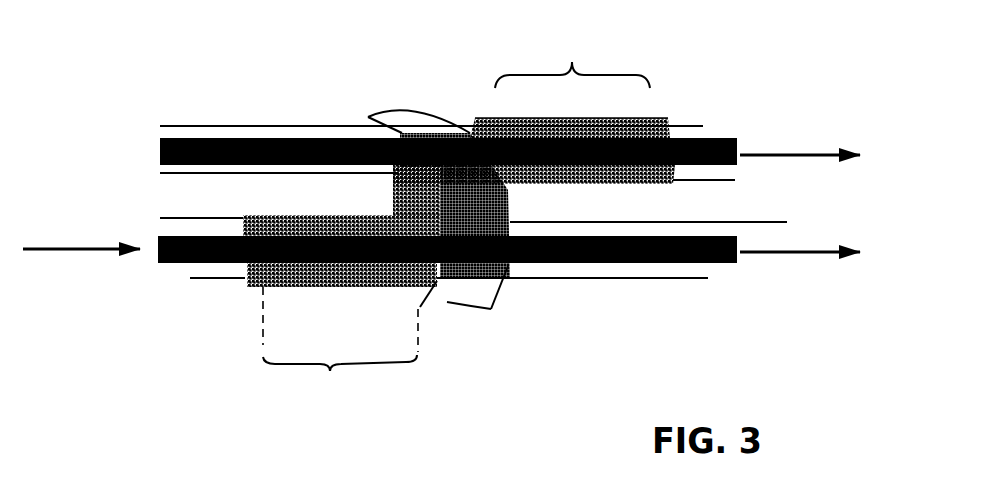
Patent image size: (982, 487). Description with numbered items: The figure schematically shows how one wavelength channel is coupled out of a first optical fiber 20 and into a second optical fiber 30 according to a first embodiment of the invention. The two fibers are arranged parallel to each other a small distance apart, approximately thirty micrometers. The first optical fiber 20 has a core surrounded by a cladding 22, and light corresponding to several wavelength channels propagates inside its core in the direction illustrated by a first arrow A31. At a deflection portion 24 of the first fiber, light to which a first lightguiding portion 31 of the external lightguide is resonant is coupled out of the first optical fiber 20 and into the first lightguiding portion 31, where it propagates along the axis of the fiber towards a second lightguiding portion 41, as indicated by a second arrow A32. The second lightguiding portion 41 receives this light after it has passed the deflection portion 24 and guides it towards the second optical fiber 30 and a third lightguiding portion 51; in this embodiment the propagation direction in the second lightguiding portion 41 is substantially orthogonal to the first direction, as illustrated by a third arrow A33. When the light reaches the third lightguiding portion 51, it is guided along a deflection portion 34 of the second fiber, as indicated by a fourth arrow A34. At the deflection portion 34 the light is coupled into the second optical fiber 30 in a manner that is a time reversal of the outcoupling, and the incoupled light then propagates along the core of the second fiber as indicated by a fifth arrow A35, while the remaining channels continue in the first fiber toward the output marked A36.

The first optical fiber 20 is at (149, 222).
The cladding 22 is at (184, 129).
The deflection portion 24 is at (340, 348).
The second optical fiber 30 is at (156, 124).
The first lightguiding portion 31 is at (254, 208).
The deflection portion of the second fiber 34 is at (570, 80).
The second lightguiding portion 41 is at (439, 105).
The third lightguiding portion 51 is at (660, 109).
The first arrow A31 is at (48, 249).
The second arrow A32 is at (318, 287).
The third arrow A33 is at (397, 200).
The fourth arrow A34 is at (633, 212).
The fifth arrow A35 is at (752, 155).
The through output signal A36 is at (763, 253).